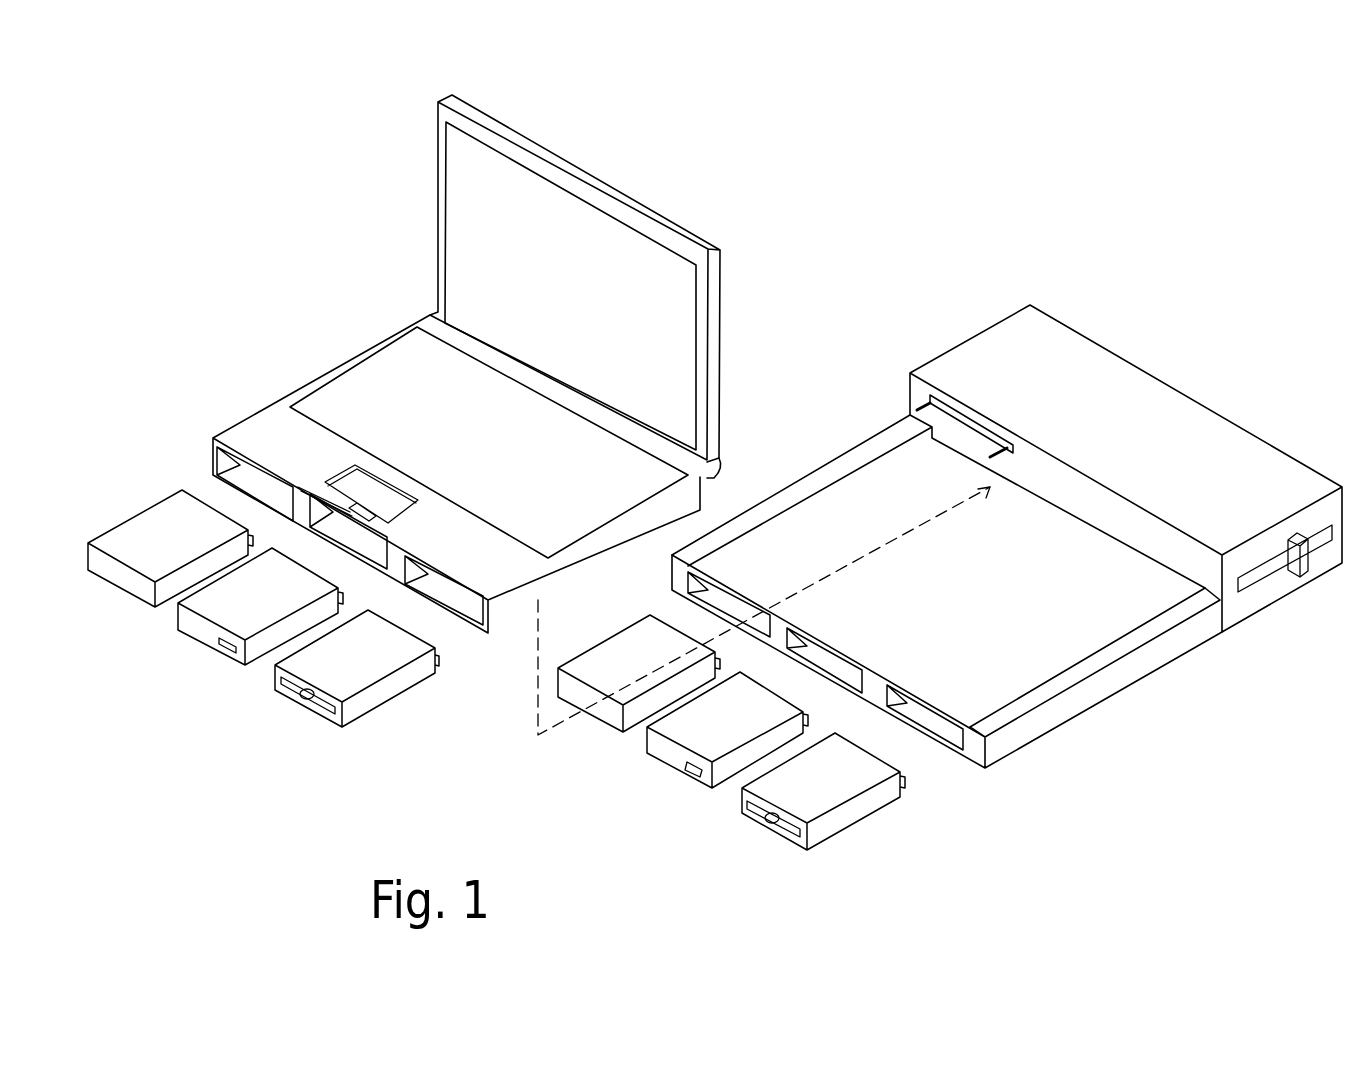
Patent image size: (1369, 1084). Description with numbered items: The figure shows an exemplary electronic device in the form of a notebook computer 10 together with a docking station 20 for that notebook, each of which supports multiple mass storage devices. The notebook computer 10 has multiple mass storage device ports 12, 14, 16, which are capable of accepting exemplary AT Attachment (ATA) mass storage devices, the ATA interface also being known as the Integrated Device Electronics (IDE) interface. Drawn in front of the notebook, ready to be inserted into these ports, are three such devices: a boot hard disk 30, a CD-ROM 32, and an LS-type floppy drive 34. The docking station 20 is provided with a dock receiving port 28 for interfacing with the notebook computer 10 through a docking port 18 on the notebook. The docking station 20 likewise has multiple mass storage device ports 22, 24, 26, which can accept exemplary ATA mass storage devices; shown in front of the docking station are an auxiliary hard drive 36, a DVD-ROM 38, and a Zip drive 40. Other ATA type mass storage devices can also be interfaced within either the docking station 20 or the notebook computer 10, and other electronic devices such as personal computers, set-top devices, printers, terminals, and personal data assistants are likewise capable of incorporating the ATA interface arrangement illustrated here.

The notebook computer 10 is at (600, 178).
The mass storage device port 12 is at (240, 467).
The mass storage device port 14 is at (360, 548).
The mass storage device port 16 is at (447, 595).
The docking port 18 is at (478, 310).
The docking station 20 is at (1235, 420).
The mass storage device port 22 is at (712, 596).
The mass storage device port 24 is at (805, 650).
The mass storage device port 26 is at (935, 723).
The dock receiving port 28 is at (972, 418).
The boot hard disk 30 is at (150, 562).
The CD-ROM 32 is at (227, 618).
The LS-120 drive 34 is at (330, 677).
The auxiliary hard drive 36 is at (605, 672).
The DVD-ROM 38 is at (712, 747).
The Zip drive 40 is at (797, 800).